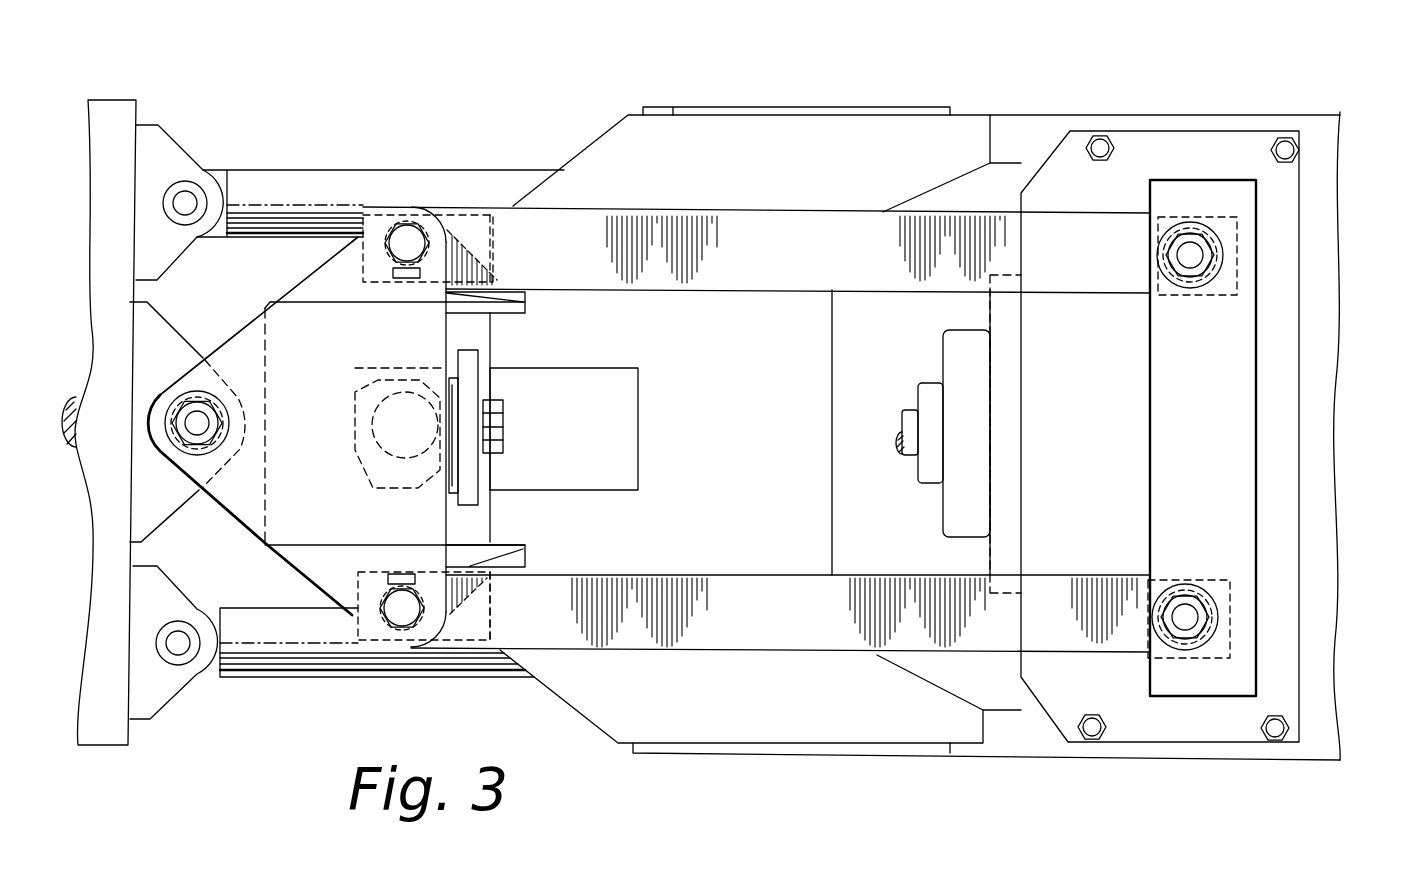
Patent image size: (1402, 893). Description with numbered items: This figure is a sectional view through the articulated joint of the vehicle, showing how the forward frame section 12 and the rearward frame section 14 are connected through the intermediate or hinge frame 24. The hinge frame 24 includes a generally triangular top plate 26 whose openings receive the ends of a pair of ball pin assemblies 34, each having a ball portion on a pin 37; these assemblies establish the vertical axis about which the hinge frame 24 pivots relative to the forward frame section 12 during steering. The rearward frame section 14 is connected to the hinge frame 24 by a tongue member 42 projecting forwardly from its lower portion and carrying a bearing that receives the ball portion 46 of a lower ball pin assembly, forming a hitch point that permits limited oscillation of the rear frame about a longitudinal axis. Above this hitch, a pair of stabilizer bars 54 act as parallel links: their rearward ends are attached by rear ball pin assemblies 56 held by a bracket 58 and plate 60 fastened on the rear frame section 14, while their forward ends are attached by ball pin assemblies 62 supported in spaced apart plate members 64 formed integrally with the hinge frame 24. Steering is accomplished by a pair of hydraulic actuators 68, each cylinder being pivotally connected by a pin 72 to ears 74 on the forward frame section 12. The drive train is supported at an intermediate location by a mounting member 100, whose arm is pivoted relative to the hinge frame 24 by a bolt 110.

The forward frame section 12 is at (112, 90).
The rearward frame section 14 is at (594, 130).
The intermediate or hinge frame 24 is at (220, 336).
The top plate 26 is at (288, 340).
The ball pin assembly 34 is at (178, 457).
The pin 37 is at (196, 423).
The tongue member 42 is at (365, 480).
The ball portion 46 is at (392, 387).
The stabilizer bar 54 is at (775, 232).
The rear ball pin assembly 56 is at (1159, 240).
The bracket 58 is at (1235, 493).
The plate 60 is at (1273, 653).
The ball pin assembly 62 is at (408, 216).
The plate member 64 is at (357, 270).
The hydraulic actuator 68 is at (308, 182).
The pin 72 is at (186, 202).
The ear 74 is at (155, 153).
The mounting member or support structure 100 is at (491, 349).
The bolt 110 is at (507, 427).